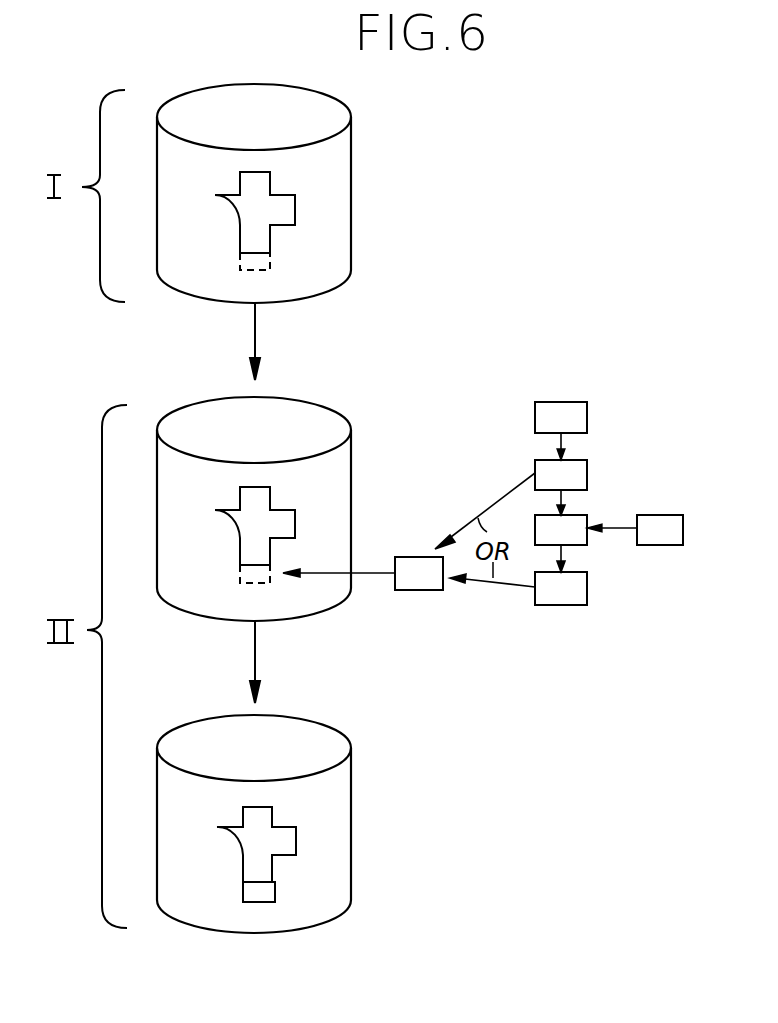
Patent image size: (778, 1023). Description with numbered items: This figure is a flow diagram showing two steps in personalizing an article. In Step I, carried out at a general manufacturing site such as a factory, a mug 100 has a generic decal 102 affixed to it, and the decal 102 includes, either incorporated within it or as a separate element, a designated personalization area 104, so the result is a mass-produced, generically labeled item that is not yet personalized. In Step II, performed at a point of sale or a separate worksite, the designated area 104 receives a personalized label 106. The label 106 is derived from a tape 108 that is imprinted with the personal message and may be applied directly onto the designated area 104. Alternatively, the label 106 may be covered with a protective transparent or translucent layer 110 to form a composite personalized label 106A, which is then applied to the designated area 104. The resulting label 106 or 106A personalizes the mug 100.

The mug 100 is at (352, 219).
The decal 102 is at (293, 193).
The designated personalization area 104 is at (270, 262).
The personalized label 106 is at (410, 557).
The composite personalized label 106A is at (587, 590).
The tape 108 is at (587, 414).
The protective transparent or translucent layer 110 is at (683, 532).